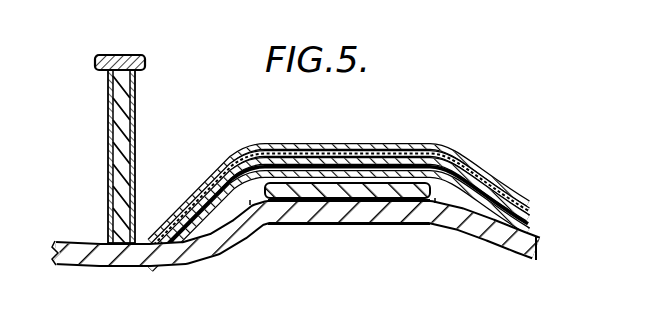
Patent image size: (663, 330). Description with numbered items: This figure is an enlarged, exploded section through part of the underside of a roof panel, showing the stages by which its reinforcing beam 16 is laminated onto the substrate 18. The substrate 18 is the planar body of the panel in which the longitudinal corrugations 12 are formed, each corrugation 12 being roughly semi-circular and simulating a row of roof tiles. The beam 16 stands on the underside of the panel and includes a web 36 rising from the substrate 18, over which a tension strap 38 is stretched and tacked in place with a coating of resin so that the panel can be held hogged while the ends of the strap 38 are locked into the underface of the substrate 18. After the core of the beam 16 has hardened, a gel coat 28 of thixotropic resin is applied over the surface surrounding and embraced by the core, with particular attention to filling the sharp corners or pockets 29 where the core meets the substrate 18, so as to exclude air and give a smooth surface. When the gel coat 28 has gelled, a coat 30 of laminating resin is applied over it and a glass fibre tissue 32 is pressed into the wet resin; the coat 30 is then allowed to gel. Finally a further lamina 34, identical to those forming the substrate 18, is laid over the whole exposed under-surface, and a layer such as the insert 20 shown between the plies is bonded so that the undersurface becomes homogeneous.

The longitudinal corrugation 12 is at (125, 268).
The integral beam 16 is at (98, 133).
The substrate 18 is at (403, 216).
The insert layer 20 is at (341, 196).
The gel coat 28 is at (535, 232).
The pocket 29 is at (250, 200).
The coat of laminating resin 30 is at (527, 220).
The glass fibre tissue 32 is at (526, 212).
The lamina 34 is at (107, 150).
The web 36 is at (112, 204).
The tension strap 38 is at (115, 55).